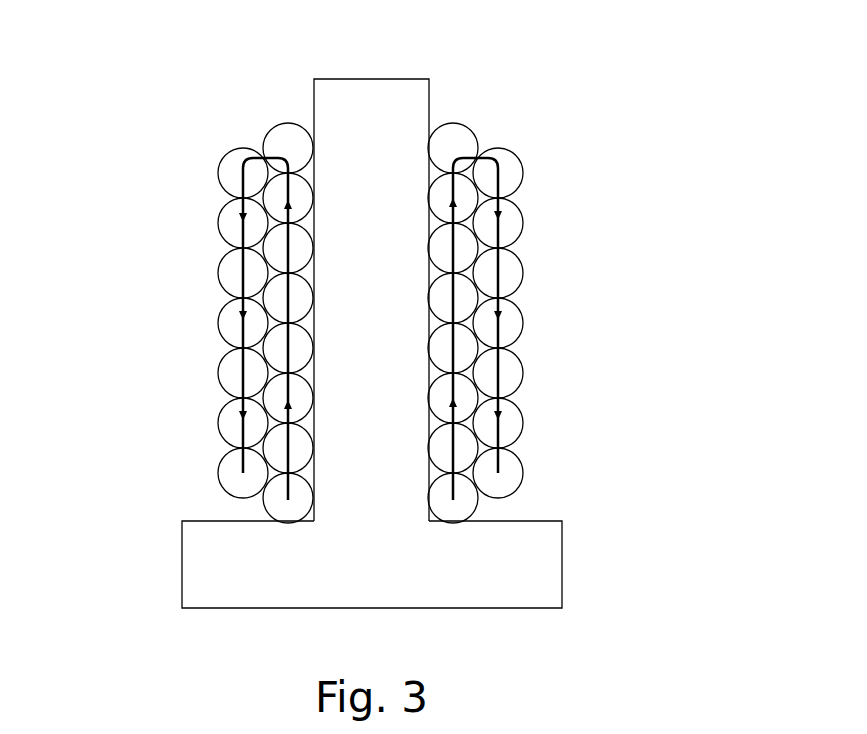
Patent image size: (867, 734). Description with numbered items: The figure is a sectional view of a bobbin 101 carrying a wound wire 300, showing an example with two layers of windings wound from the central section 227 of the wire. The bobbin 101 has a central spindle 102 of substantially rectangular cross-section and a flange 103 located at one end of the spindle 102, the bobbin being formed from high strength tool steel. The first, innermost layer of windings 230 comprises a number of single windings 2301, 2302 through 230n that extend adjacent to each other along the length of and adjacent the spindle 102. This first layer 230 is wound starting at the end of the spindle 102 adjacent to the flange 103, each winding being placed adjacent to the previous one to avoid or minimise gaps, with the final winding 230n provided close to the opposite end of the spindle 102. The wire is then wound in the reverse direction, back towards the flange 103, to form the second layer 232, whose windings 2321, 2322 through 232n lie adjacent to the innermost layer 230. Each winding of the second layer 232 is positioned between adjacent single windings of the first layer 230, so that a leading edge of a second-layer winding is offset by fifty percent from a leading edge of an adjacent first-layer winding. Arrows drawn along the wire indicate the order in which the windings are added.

The bobbin 101 is at (424, 313).
The spindle 102 is at (412, 90).
The flange 103 is at (545, 572).
The central section of the wire 227 is at (537, 367).
The first layer of windings 230 is at (453, 536).
The first winding of the first layer 2301 is at (282, 510).
The second winding of the first layer 2302 is at (272, 443).
The n-th winding of the first layer 230n is at (289, 132).
The second layer of windings 232 is at (557, 281).
The first winding of the second layer 2321 is at (510, 173).
The second winding of the second layer 2322 is at (510, 223).
The n-th winding of the second layer 232n is at (510, 470).
The wound wire 300 is at (198, 282).